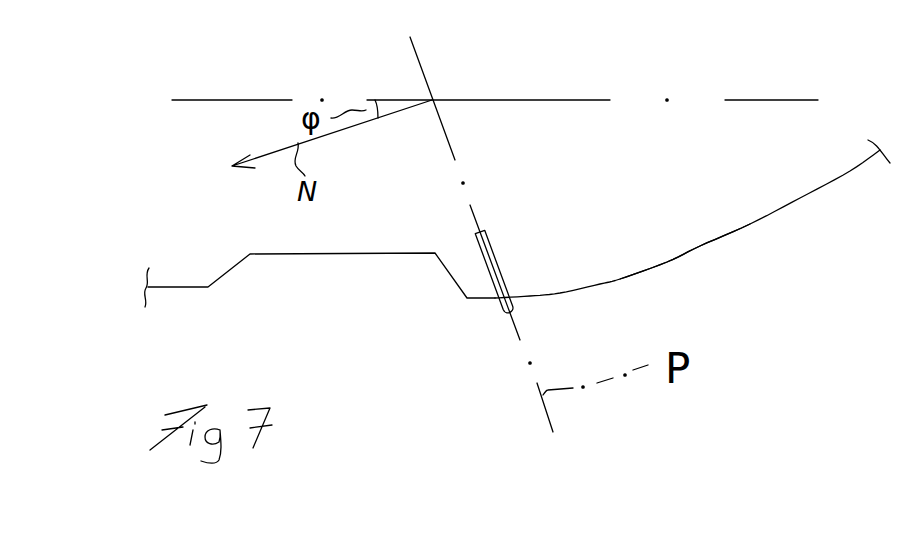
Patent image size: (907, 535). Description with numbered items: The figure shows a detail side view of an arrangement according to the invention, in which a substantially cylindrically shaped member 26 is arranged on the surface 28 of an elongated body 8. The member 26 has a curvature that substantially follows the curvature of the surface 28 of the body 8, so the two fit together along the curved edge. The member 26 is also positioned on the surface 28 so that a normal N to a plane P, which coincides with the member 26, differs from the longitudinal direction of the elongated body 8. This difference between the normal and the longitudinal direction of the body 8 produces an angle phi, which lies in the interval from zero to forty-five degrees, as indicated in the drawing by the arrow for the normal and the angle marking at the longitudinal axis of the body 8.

The elongated body 8 is at (587, 279).
The substantially cylindrically shaped member 26 is at (495, 305).
The surface of the body 28 is at (667, 265).